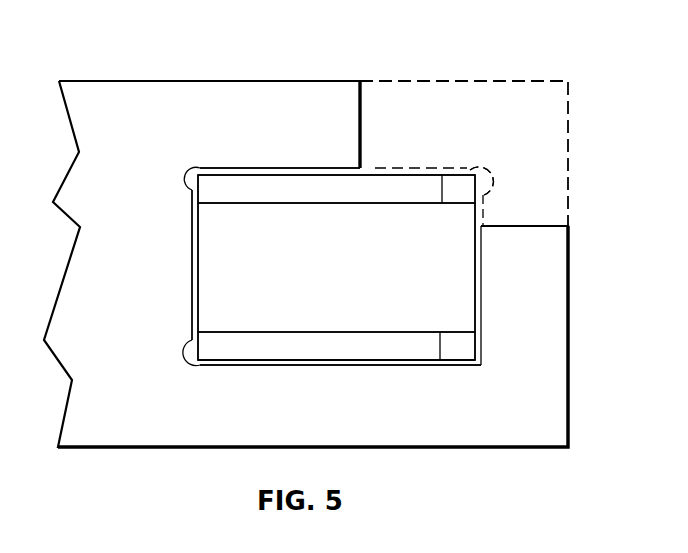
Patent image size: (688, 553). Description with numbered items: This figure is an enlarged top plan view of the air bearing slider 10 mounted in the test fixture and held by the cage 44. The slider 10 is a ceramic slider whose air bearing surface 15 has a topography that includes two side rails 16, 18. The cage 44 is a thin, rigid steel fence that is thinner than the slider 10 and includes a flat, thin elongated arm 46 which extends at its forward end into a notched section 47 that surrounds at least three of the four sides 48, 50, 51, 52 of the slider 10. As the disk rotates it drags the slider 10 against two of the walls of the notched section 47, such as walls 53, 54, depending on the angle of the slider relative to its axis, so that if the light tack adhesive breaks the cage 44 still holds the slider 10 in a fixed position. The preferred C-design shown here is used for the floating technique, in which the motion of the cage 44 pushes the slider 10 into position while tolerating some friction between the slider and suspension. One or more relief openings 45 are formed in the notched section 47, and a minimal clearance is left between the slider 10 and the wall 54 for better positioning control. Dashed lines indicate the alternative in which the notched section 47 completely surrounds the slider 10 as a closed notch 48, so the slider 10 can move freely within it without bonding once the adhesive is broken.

The air bearing slider 10 is at (405, 166).
The air bearing surface 15 is at (330, 273).
The side rail 16 is at (339, 198).
The side rail 18 is at (339, 353).
The cage 44 is at (203, 452).
The relief openings 45 is at (177, 182).
The elongated arm 46 is at (150, 80).
The notched section 47 is at (363, 148).
The side of slider / closed notch 48 is at (481, 262).
The side of slider 50 is at (413, 177).
The side of slider 51 is at (192, 262).
The side of slider 52 is at (298, 362).
The wall of notched section 53 is at (295, 168).
The wall of notched section 54 is at (258, 362).